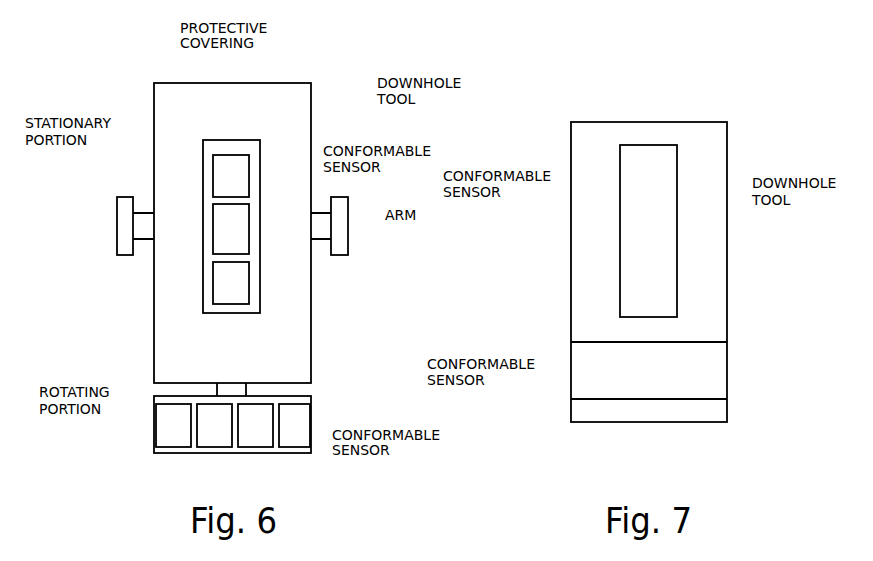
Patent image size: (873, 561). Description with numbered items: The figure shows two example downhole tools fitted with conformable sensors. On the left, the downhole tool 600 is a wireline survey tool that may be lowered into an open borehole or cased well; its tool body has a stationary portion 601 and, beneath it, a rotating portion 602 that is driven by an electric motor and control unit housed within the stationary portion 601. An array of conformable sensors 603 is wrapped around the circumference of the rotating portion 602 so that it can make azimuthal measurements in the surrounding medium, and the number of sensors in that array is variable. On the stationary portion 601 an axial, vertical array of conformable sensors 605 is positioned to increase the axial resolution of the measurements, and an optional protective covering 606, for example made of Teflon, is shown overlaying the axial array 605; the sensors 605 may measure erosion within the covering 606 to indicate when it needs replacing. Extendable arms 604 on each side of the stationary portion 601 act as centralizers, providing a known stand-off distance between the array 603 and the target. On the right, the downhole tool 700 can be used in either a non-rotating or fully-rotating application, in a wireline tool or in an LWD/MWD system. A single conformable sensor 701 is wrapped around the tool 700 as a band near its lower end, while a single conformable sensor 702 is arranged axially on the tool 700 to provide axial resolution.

In FIG. 6, the downhole tool 600 is at (247, 251).
In FIG. 6, the stationary portion 601 is at (154, 135).
In FIG. 6, the rotating portion 602 is at (154, 399).
In FIG. 6, the array of conformable sensors 603 is at (300, 422).
In FIG. 6, the arms 604 is at (348, 227).
In FIG. 6, the axial array of conformable sensors 605 is at (248, 168).
In FIG. 6, the protective covering 606 is at (217, 140).
In FIG. 7, the downhole tool 700 is at (658, 271).
In FIG. 7, the conformable sensor 701 is at (582, 377).
In FIG. 7, the conformable sensor 702 is at (632, 178).